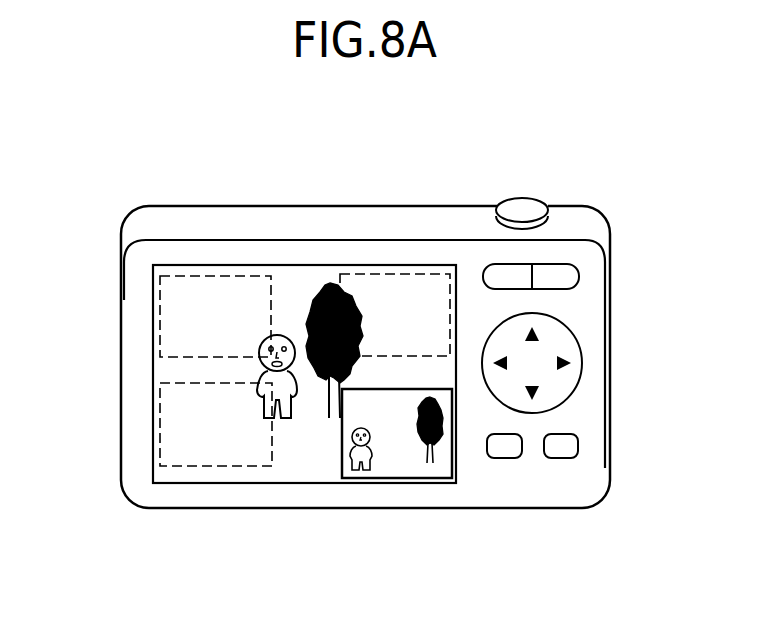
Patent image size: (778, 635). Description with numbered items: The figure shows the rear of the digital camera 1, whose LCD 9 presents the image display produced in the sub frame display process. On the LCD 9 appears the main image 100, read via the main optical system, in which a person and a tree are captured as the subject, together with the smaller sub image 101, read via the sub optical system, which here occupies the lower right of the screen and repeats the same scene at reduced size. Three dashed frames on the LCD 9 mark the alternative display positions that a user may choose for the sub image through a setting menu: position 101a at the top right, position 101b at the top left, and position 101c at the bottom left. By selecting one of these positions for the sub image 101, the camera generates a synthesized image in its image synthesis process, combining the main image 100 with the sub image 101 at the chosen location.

The digital camera 1 is at (628, 247).
The LCD 9 is at (172, 364).
The main image 100 is at (204, 474).
The sub image 101 is at (387, 460).
The top right position 101a is at (407, 274).
The top left position 101b is at (225, 276).
The bottom left position 101c is at (254, 466).